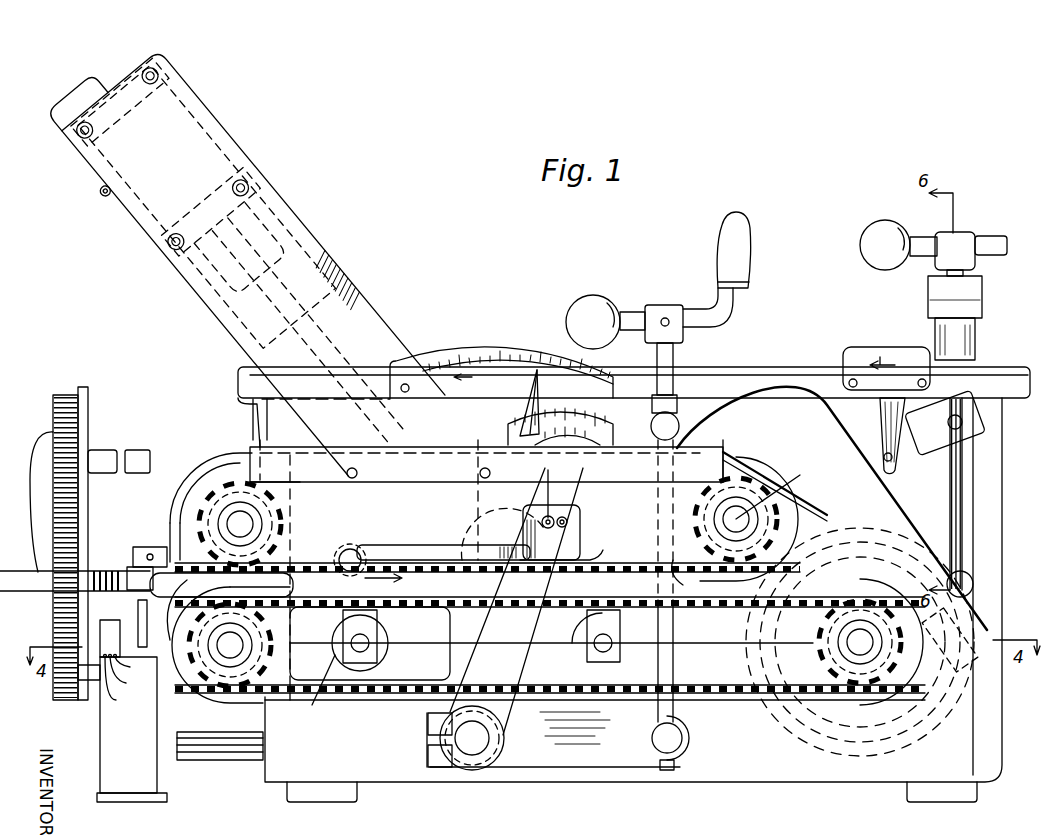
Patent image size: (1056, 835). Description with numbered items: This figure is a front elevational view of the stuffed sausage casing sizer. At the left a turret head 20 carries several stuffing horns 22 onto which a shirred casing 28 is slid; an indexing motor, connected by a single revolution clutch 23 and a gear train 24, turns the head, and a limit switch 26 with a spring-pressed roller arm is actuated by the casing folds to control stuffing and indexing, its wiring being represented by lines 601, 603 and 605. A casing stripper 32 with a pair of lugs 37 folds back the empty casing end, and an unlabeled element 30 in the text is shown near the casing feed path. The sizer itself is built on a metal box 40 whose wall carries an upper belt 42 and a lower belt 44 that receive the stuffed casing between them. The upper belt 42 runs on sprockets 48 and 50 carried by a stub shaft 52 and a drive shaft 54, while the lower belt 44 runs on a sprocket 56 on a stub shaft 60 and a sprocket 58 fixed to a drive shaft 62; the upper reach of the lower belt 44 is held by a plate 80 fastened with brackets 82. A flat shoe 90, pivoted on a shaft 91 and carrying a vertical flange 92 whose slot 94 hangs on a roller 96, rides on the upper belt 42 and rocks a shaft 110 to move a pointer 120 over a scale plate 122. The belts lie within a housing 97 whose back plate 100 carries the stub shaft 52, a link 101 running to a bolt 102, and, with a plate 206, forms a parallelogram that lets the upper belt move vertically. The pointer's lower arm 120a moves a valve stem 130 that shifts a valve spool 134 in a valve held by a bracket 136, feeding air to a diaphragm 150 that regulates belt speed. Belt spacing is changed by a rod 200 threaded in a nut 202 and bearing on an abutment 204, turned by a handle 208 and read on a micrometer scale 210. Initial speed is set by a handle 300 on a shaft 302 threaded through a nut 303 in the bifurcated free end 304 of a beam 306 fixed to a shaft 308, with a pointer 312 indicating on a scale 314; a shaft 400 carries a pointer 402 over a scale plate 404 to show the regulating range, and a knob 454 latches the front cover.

The turret head 20 is at (80, 386).
The stuffing horn 22 is at (105, 450).
The single revolution clutch 23 is at (84, 680).
The gear train 24 is at (55, 692).
The limit switch 26 is at (108, 626).
The casing 28 is at (128, 567).
The upper conveyor chain 30 is at (352, 575).
The casing stripper 32 is at (145, 547).
The lugs 37 is at (140, 625).
The box 40 is at (1003, 468).
The upper belt 42 is at (675, 568).
The lower belt 44 is at (285, 612).
The sprocket 48 is at (283, 510).
The sprocket 50 is at (800, 498).
The stub shaft 52 is at (262, 524).
The drive shaft 54 is at (757, 494).
The sprocket 56 is at (283, 657).
The sprocket 58 is at (822, 630).
The stub shaft 60 is at (231, 665).
The drive shaft 62 is at (858, 650).
The plate 80 is at (410, 607).
The brackets 82 is at (372, 648).
The shoe 90 is at (375, 547).
The shaft 91 is at (350, 550).
The vertical flange 92 is at (440, 547).
The slot 94 is at (528, 512).
The roller 96 is at (547, 487).
The housing 97 is at (232, 455).
The plate 100 is at (187, 615).
The link 101 is at (328, 686).
The bolt 102 is at (362, 655).
The shaft 110 is at (572, 520).
The pointer 120 is at (598, 440).
The lower arm 120a is at (452, 506).
The scale plate 122 is at (590, 413).
The valve stem 130 is at (395, 430).
The piston valve spool 134 is at (137, 232).
The bracket 136 is at (352, 296).
The diaphragm 150 is at (218, 758).
The rod 200 is at (968, 533).
The nut 202 is at (975, 582).
The abutment 204 is at (997, 622).
The plate 206 is at (877, 412).
The handle 208 is at (893, 230).
The micrometer scale 210 is at (982, 322).
The handle 300 is at (721, 245).
The shaft 302 is at (676, 708).
The nut 303 is at (684, 735).
The bifurcated free end 304 is at (688, 748).
The beam 306 is at (627, 703).
The shaft 308 is at (462, 736).
The pointer 312 is at (525, 400).
The scale 314 is at (520, 352).
The shaft 400 is at (891, 462).
The pointer 402 is at (903, 445).
The scale plate 404 is at (898, 347).
The knob 454 is at (470, 770).
The line 601 is at (125, 682).
The line 603 is at (132, 674).
The line 605 is at (136, 666).